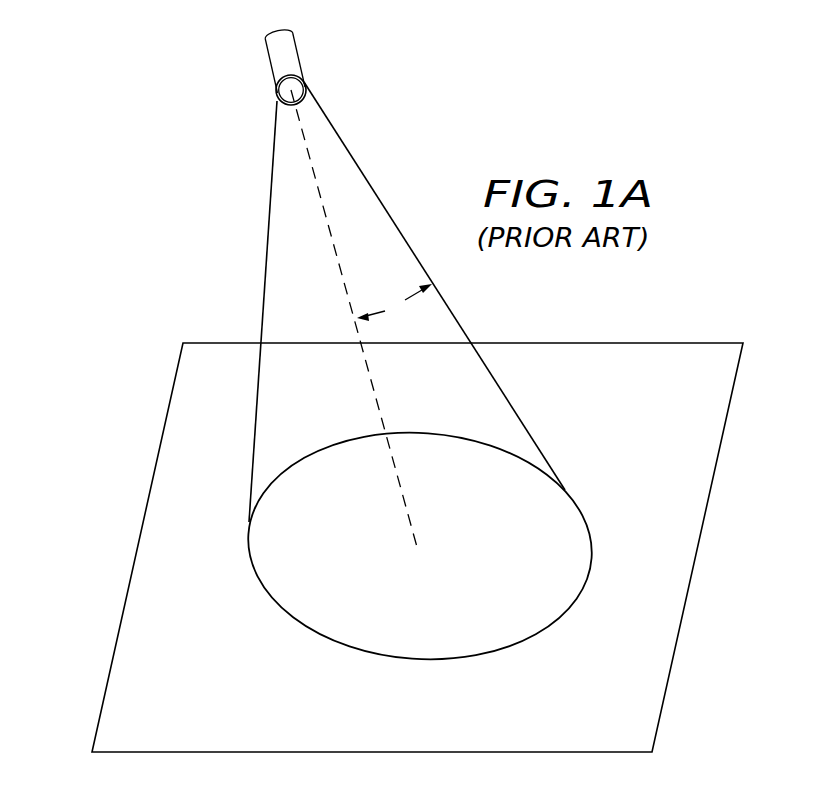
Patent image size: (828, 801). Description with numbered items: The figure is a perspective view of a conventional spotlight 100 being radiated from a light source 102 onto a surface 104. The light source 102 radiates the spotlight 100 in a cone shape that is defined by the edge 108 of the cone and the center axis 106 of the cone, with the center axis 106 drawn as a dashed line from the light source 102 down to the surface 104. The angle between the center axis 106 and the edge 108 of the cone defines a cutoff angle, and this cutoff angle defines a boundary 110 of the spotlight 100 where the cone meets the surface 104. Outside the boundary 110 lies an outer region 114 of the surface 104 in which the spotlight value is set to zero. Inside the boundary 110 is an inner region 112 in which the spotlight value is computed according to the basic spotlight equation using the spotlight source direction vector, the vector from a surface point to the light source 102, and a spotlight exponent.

The spotlight 100 is at (96, 196).
The light source 102 is at (271, 71).
The surface 104 is at (660, 342).
The center axis 106 is at (378, 400).
The edge 108 is at (266, 228).
The boundary 110 is at (291, 621).
The inner region 112 is at (441, 608).
The outer region 114 is at (641, 735).